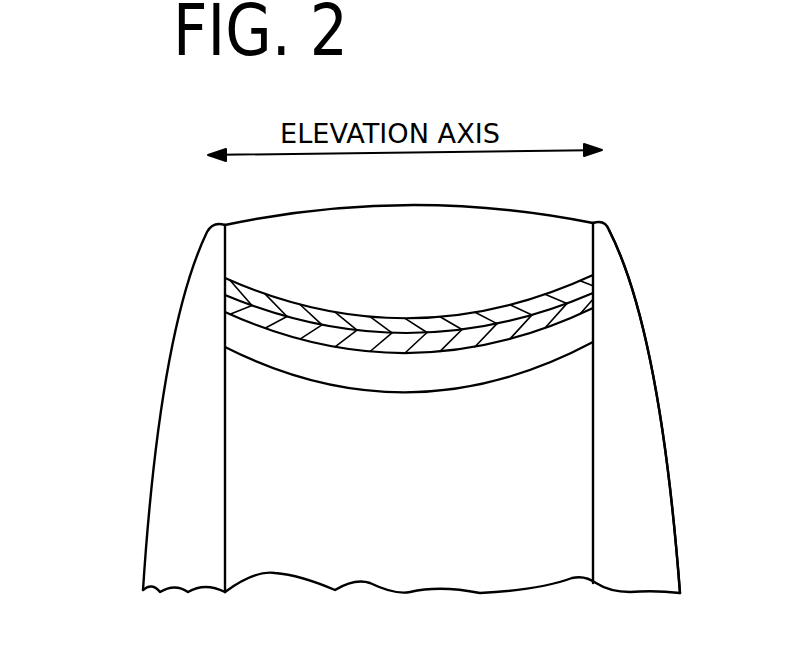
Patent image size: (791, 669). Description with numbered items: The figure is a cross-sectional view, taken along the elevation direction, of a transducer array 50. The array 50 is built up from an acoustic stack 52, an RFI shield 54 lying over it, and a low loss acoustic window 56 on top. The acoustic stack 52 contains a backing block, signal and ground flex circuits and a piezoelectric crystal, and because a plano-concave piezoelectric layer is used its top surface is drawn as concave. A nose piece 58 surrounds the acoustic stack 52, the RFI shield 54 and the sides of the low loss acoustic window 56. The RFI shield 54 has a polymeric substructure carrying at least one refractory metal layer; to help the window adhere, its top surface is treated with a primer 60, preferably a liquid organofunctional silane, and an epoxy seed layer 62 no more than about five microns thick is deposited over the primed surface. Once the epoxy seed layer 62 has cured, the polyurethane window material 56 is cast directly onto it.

The transducer array 50 is at (133, 515).
The acoustic stack 52 is at (267, 433).
The RFI shield 54 is at (382, 377).
The low loss acoustic window 56 is at (493, 237).
The nose piece 58 is at (633, 422).
The primer 60 is at (568, 315).
The epoxy seed layer 62 is at (490, 318).